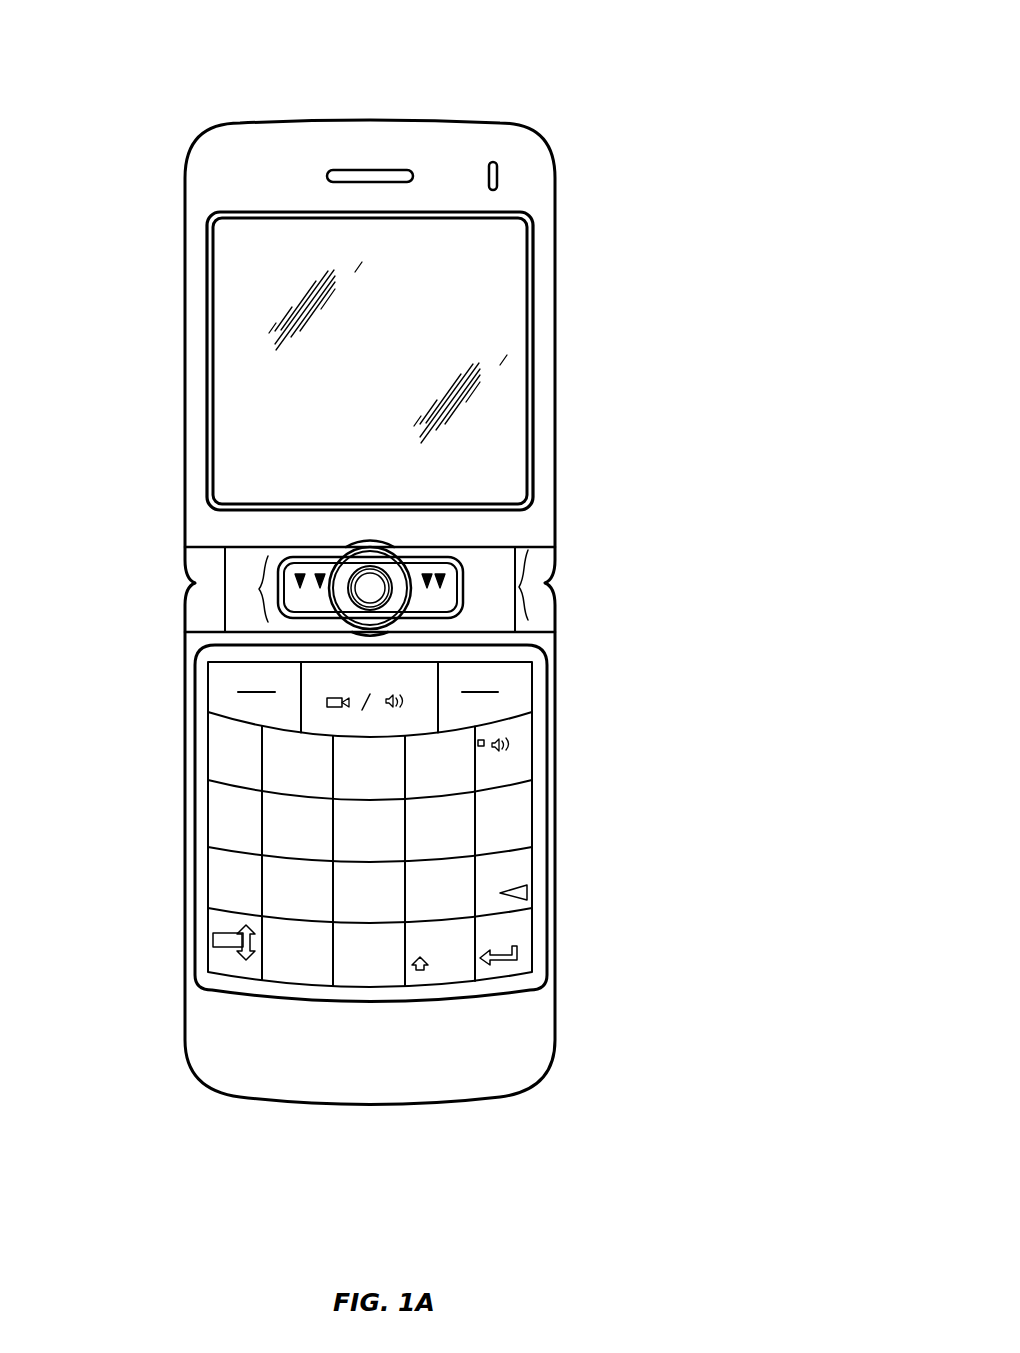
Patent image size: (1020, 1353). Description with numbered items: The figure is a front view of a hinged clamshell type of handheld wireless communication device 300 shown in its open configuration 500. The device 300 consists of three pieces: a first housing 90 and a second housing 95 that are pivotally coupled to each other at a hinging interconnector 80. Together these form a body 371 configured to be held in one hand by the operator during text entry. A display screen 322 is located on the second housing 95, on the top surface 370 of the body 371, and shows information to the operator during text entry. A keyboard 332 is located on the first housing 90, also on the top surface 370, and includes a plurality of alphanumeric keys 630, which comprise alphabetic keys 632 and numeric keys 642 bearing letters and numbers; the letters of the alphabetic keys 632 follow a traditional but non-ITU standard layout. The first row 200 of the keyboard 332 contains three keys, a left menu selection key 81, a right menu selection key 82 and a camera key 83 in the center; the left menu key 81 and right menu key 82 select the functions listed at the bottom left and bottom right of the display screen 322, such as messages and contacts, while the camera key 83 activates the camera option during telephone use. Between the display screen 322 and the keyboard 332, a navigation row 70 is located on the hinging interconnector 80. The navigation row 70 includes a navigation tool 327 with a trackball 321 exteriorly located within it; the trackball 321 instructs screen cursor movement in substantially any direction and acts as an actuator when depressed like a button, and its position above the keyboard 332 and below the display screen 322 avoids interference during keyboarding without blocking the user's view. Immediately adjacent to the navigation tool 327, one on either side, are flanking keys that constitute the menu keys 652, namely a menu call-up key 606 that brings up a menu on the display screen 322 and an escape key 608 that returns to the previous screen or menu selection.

The handheld wireless communication device 300 is at (388, 23).
The open configuration 500 is at (160, 100).
The second housing 95 is at (455, 135).
The body 371 is at (548, 170).
The display screen 322 is at (238, 285).
The top surface 370 is at (490, 550).
The navigation row 70 is at (262, 592).
The hinging interconnector 80 is at (530, 582).
The navigation tool 327 is at (322, 603).
The trackball 321 is at (378, 592).
The menu call-up key 606 is at (300, 575).
The menu keys 652 is at (427, 575).
The escape key 608 is at (440, 575).
The keyboard 332 is at (316, 1012).
The first row 200 is at (197, 708).
The left menu selection key 81 is at (222, 678).
The right menu selection key 82 is at (508, 672).
The camera key 83 is at (426, 706).
The alphanumeric keys 630 is at (460, 778).
The alphabetic keys 632 is at (516, 836).
The numeric keys 642 is at (392, 955).
The first housing 90 is at (528, 1072).